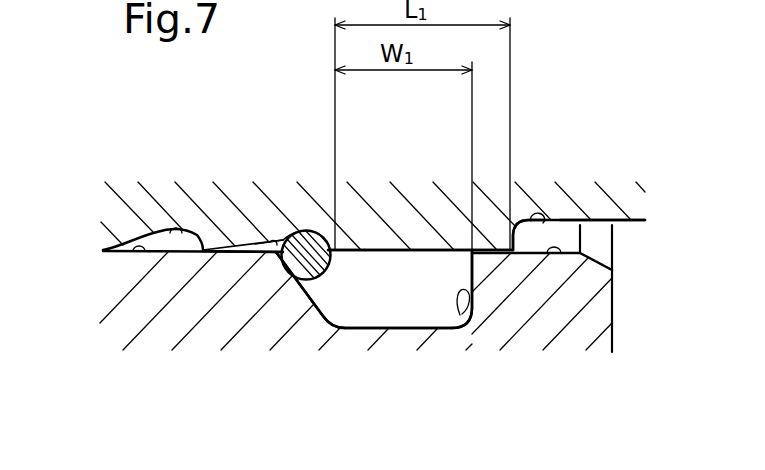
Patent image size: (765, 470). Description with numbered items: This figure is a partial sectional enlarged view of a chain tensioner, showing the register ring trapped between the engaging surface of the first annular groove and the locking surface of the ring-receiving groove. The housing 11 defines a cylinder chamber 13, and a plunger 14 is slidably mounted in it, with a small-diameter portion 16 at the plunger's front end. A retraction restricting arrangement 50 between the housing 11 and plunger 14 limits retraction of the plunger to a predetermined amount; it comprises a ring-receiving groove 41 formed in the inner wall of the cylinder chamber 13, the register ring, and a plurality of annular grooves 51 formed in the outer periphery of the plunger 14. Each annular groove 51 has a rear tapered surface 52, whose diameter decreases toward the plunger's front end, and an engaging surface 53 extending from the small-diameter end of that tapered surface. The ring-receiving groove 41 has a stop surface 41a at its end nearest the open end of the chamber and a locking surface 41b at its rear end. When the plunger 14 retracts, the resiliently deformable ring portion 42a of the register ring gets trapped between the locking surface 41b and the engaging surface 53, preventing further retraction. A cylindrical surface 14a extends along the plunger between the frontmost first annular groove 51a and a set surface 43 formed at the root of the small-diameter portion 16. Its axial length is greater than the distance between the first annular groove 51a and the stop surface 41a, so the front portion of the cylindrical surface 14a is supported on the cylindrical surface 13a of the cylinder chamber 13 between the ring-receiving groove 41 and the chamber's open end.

The housing 11 is at (173, 318).
The cylinder chamber 13 is at (127, 250).
The cylindrical surface of the cylinder chamber 13a is at (561, 254).
The plunger 14 is at (127, 195).
The cylindrical surface 14a is at (423, 253).
The small-diameter portion 16 is at (605, 218).
The ring-receiving groove 41 is at (365, 306).
The stop surface 41a is at (460, 315).
The locking surface 41b is at (323, 318).
The ring portion 42a is at (289, 230).
The set surface 43 is at (533, 215).
The retraction restricting arrangement 50 is at (321, 216).
The annular groove 51 is at (170, 228).
The first annular groove 51a is at (270, 236).
The rear tapered surface 52 is at (257, 248).
The engaging surface 53 is at (340, 251).